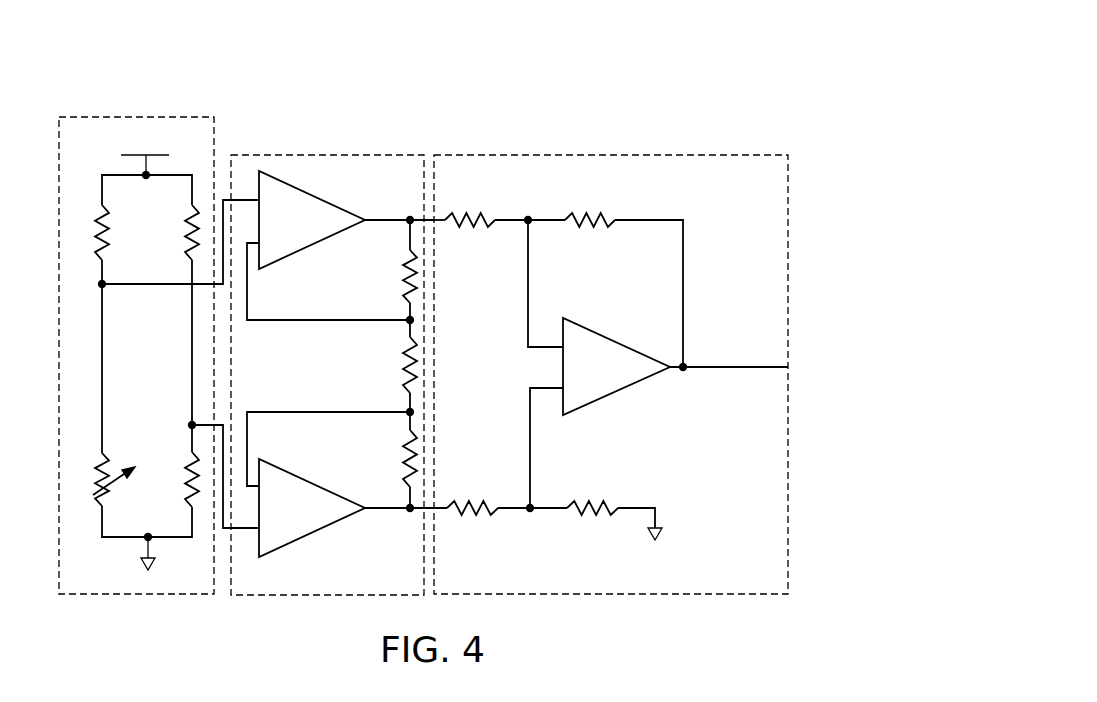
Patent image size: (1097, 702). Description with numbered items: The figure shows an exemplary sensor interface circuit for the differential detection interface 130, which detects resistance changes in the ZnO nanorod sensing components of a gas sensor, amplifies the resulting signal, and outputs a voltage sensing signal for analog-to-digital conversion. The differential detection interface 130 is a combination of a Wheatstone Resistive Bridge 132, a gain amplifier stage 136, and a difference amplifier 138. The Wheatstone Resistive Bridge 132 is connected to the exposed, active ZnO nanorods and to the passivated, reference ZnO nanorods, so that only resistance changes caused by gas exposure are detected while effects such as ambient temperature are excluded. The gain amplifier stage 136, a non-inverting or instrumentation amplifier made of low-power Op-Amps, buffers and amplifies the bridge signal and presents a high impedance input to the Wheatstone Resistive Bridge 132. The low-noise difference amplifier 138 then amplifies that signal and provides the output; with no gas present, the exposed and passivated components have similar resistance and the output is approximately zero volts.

The differential detection interface 130 is at (604, 79).
The Wheatstone Resistive Bridge 132 is at (130, 117).
The gain amplifier stage 136 is at (307, 155).
The difference amplifier 138 is at (594, 155).